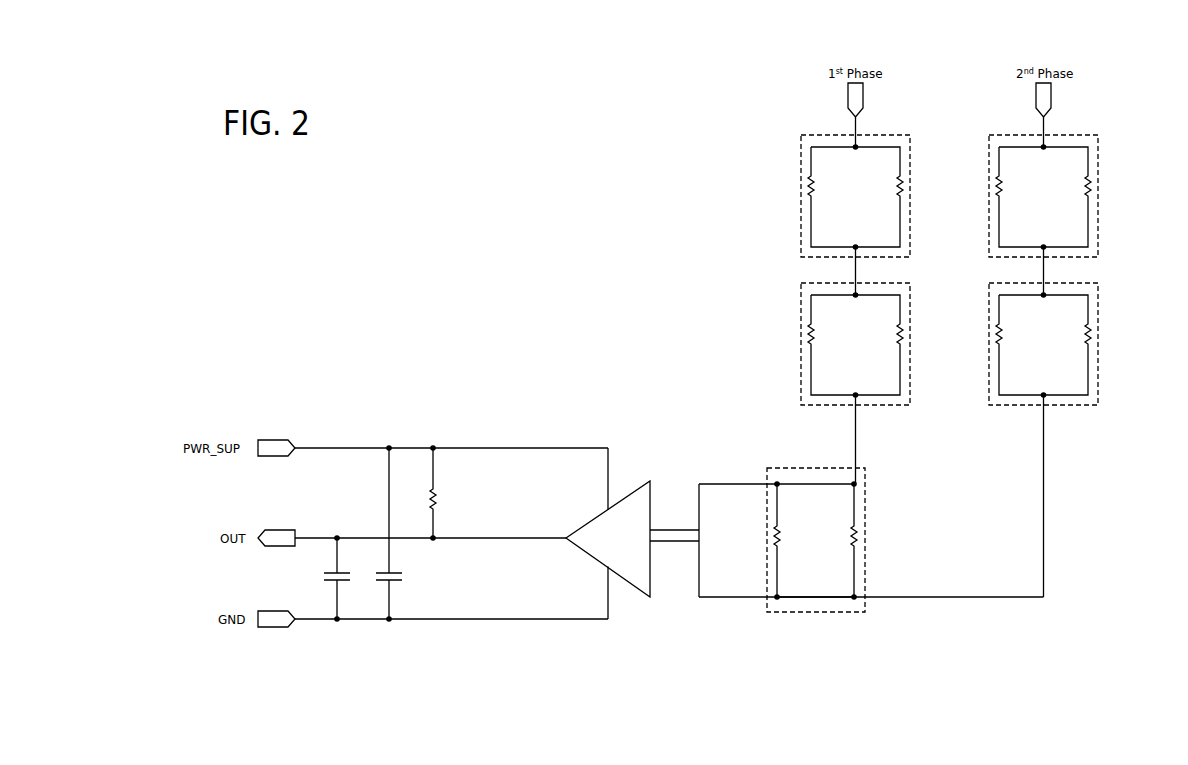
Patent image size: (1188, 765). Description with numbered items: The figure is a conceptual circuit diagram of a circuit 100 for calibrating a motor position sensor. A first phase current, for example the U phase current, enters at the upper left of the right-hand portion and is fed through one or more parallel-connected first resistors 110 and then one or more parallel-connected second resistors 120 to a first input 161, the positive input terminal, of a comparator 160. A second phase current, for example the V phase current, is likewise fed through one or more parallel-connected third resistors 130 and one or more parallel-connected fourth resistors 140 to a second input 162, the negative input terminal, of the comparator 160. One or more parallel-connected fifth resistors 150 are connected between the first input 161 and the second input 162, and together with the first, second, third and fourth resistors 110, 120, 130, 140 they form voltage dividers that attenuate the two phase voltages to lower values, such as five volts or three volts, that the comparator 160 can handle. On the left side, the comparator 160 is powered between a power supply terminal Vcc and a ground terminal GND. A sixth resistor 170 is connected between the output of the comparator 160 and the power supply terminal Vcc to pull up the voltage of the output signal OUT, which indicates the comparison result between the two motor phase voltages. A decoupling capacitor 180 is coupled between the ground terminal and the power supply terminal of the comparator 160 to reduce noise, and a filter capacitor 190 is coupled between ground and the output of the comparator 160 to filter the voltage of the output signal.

The circuit 100 is at (280, 325).
The first resistors 110 is at (800, 202).
The second resistors 120 is at (800, 338).
The third resistors 130 is at (1098, 193).
The fourth resistors 140 is at (1098, 337).
The fifth resistors 150 is at (866, 512).
The comparator 160 is at (638, 490).
The first input 161 is at (674, 522).
The second input 162 is at (674, 551).
The sixth resistor 170 is at (444, 494).
The decoupling capacitor 180 is at (404, 578).
The filter capacitor 190 is at (322, 576).